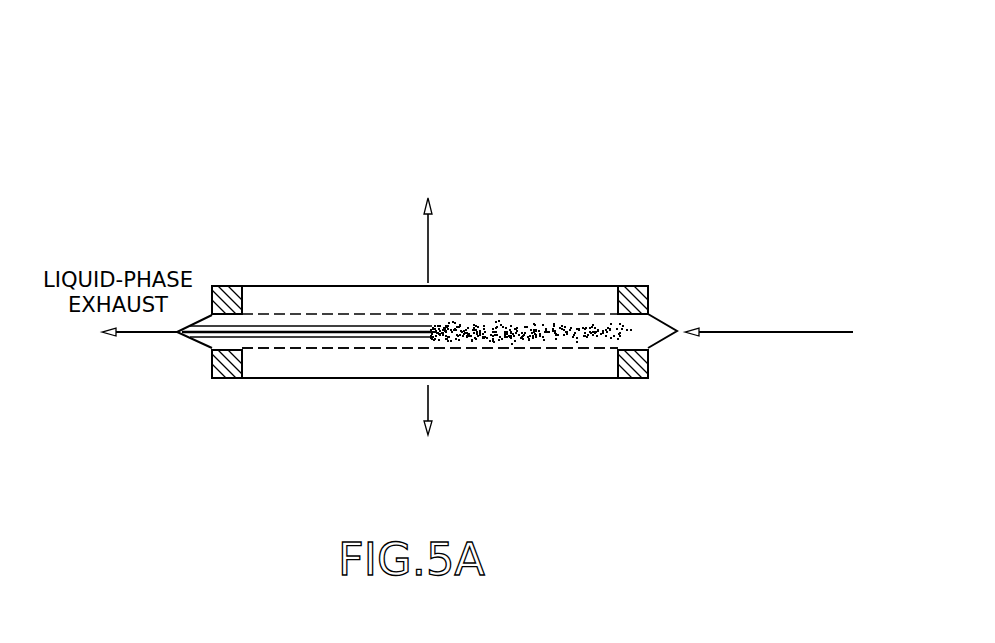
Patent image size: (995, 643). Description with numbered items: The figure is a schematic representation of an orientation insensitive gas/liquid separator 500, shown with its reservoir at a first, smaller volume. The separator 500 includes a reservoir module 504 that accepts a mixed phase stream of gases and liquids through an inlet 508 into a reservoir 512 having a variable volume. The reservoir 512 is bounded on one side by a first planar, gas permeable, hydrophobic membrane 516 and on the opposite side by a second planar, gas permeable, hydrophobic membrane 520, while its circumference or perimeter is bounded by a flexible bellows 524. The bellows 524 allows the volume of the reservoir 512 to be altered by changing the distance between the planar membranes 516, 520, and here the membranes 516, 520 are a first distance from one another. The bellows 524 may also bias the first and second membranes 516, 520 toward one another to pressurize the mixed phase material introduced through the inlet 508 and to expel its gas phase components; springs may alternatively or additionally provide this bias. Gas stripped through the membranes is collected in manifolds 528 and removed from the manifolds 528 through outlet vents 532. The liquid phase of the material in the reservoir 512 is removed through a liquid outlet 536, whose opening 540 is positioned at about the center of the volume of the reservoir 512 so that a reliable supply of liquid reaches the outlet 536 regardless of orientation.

The gas/liquid separator 500 is at (538, 88).
The reservoir module 504 is at (643, 287).
The inlet 508 is at (710, 337).
The reservoir 512 is at (517, 348).
The first planar gas permeable hydrophobic membrane 516 is at (393, 288).
The second planar gas permeable hydrophobic membrane 520 is at (320, 348).
The flexible bellows 524 is at (662, 318).
The manifolds 528 is at (266, 287).
The outlet vents 532 is at (421, 284).
The liquid outlet 536 is at (407, 337).
The opening 540 is at (465, 287).